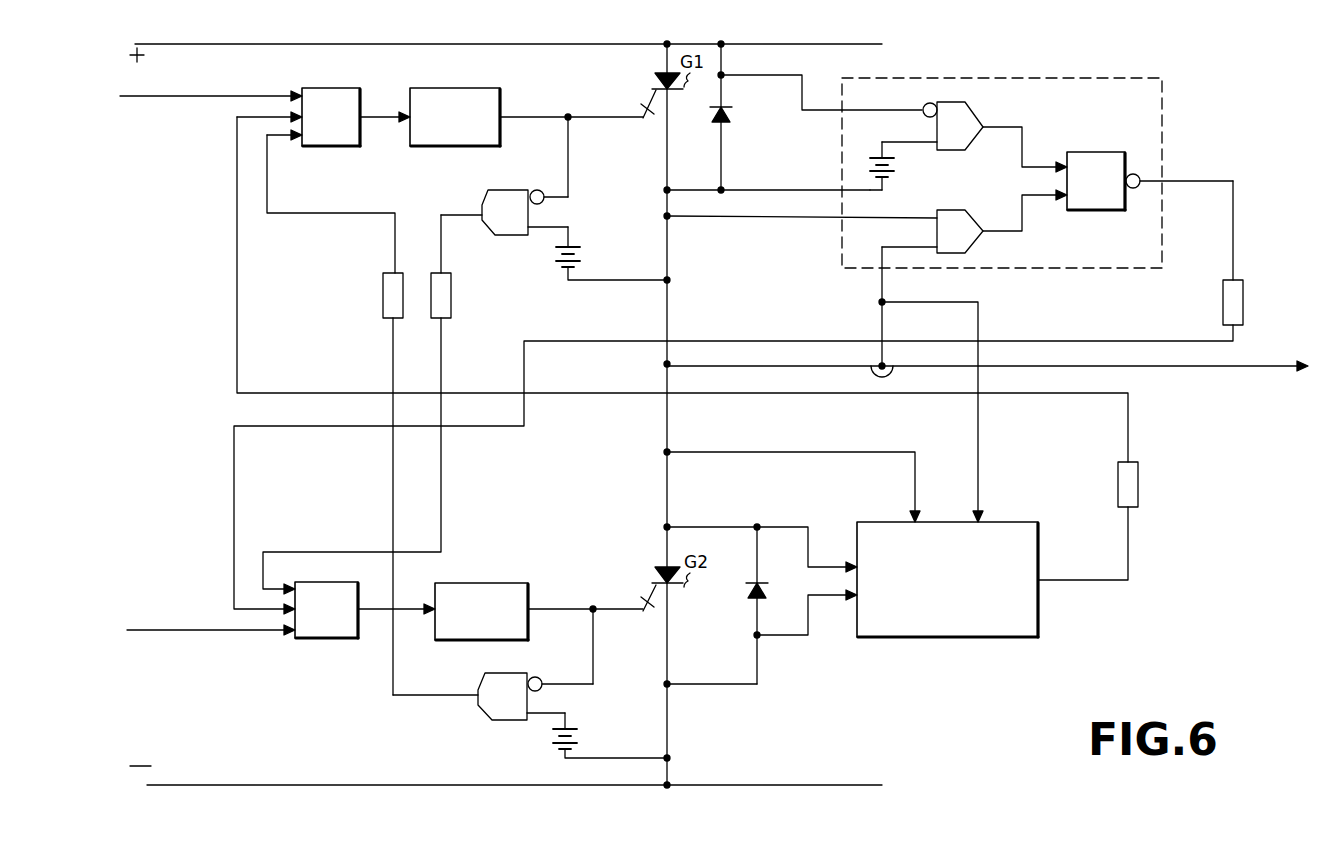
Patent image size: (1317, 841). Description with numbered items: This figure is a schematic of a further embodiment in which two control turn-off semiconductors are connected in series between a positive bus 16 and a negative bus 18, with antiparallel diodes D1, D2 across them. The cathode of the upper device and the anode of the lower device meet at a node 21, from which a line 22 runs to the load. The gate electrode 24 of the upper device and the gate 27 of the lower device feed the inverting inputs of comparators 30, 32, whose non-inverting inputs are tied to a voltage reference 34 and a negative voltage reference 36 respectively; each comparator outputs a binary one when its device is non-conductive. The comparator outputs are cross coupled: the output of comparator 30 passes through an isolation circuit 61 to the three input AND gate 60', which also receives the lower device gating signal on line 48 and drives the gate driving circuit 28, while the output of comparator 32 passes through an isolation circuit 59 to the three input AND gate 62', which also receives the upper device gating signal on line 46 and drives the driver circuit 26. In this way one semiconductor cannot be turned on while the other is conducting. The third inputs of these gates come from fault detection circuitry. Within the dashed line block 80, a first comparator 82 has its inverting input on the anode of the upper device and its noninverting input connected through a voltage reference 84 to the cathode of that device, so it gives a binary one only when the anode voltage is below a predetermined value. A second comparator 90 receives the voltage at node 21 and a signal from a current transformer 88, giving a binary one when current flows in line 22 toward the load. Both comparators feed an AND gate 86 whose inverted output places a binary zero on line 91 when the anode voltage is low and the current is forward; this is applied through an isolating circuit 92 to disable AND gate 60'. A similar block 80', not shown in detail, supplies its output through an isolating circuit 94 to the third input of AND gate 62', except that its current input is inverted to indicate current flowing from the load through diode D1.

The positive bus 16 is at (229, 44).
The negative bus 18 is at (232, 785).
The node 21 is at (662, 364).
The line 22 is at (1289, 356).
The gate electrode 24 is at (644, 98).
The driver circuit 26 is at (466, 88).
The gate 27 is at (640, 598).
The gate driving circuit 28 is at (520, 583).
The comparator 30 is at (488, 191).
The comparator 32 is at (475, 722).
The voltage reference 34 is at (590, 262).
The negative voltage reference 36 is at (578, 742).
The line 46 is at (277, 96).
The line 48 is at (192, 628).
The isolation circuit 59 is at (452, 301).
The three input AND gate 60' is at (320, 634).
The isolation circuit 61 is at (382, 303).
The three input AND gate 62' is at (298, 100).
The dashed line block 80 is at (1032, 157).
The block 80' is at (978, 594).
The first comparator 82 is at (983, 121).
The voltage reference 84 is at (904, 177).
The AND gate 86 is at (1105, 151).
The current transformer 88 is at (896, 380).
The second comparator 90 is at (981, 217).
The line 91 is at (1240, 185).
The isolating circuit 92 is at (1244, 300).
The isolating circuit 94 is at (1146, 490).
The diode D1 is at (734, 111).
The diode D2 is at (749, 586).